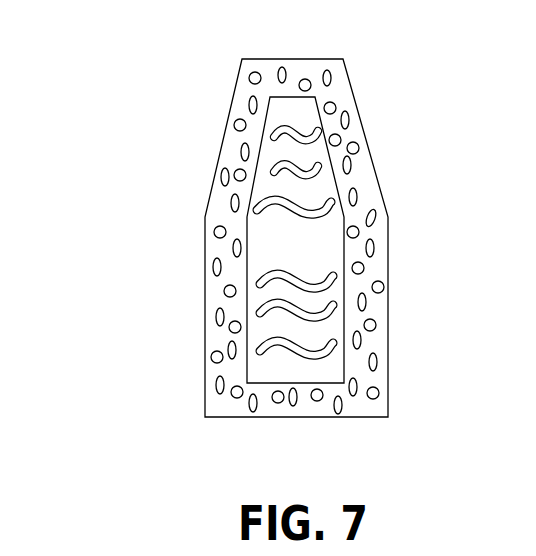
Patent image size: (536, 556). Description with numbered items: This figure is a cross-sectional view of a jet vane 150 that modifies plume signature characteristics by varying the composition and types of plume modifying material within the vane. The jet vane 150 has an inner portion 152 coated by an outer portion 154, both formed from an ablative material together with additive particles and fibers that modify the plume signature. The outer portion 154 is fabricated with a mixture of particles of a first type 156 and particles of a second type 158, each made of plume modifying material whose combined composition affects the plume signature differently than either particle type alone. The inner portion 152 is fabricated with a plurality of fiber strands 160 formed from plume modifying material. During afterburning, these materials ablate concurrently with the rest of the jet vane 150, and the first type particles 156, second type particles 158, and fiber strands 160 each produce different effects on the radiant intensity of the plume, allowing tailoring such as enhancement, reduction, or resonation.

The jet vane 150 is at (137, 88).
The inner portion 152 is at (283, 201).
The outer portion 154 is at (360, 115).
The particles of a first type 156 is at (372, 214).
The particles of a second type 158 is at (380, 282).
The fiber strands 160 is at (288, 125).